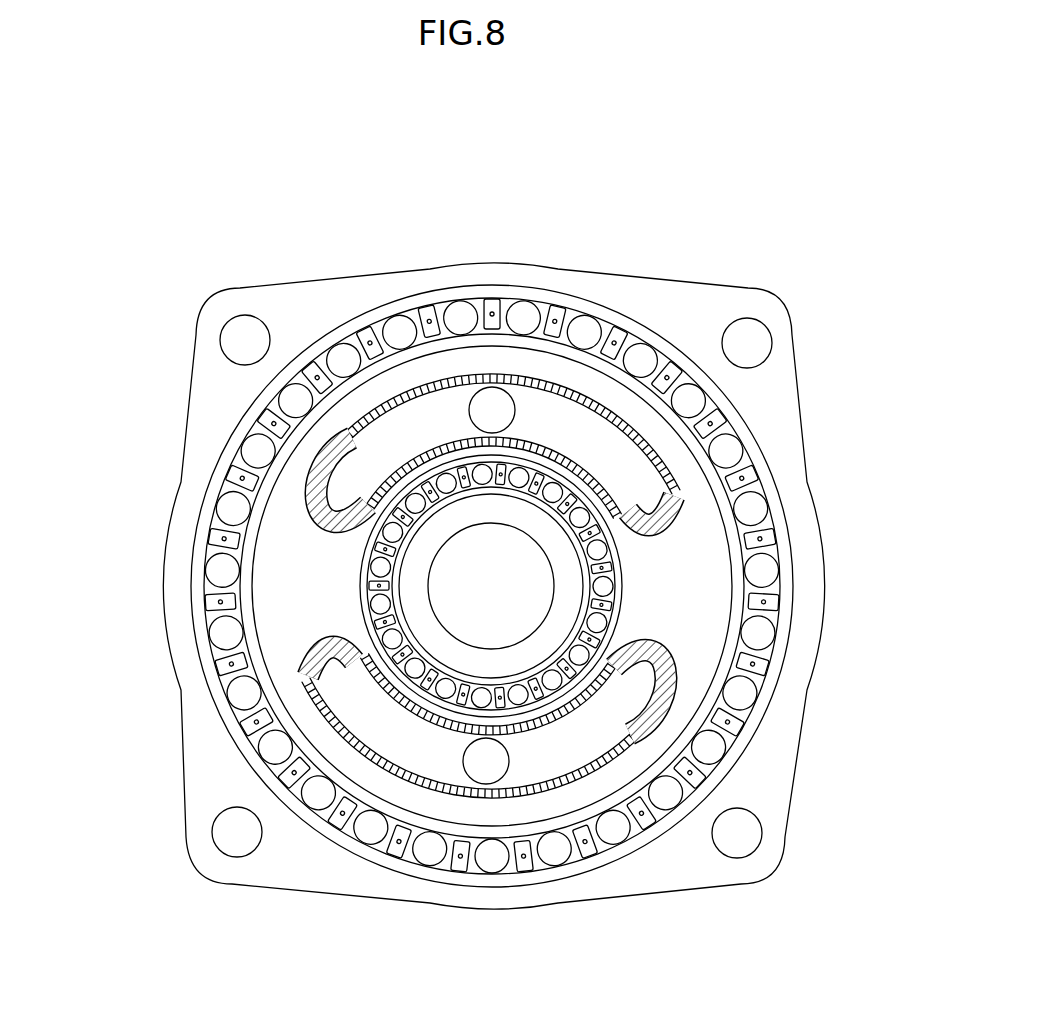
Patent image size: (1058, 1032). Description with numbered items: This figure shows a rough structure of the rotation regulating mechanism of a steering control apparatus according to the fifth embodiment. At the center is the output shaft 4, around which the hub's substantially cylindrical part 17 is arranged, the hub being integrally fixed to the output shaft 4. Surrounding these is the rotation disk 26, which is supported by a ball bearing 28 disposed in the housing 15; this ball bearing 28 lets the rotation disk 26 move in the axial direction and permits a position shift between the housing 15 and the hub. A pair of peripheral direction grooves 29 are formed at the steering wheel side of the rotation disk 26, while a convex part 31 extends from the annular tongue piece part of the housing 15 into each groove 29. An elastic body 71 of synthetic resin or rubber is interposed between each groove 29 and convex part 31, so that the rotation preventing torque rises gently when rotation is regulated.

The output shaft 4 is at (448, 597).
The housing 15 is at (780, 745).
The substantially cylindrical part 17 is at (517, 653).
The rotation disk 26 is at (703, 595).
The ball bearing 28 is at (653, 357).
The peripheral direction groove 29 is at (365, 447).
The convex part 31 is at (495, 414).
The elastic body 71 is at (305, 520).